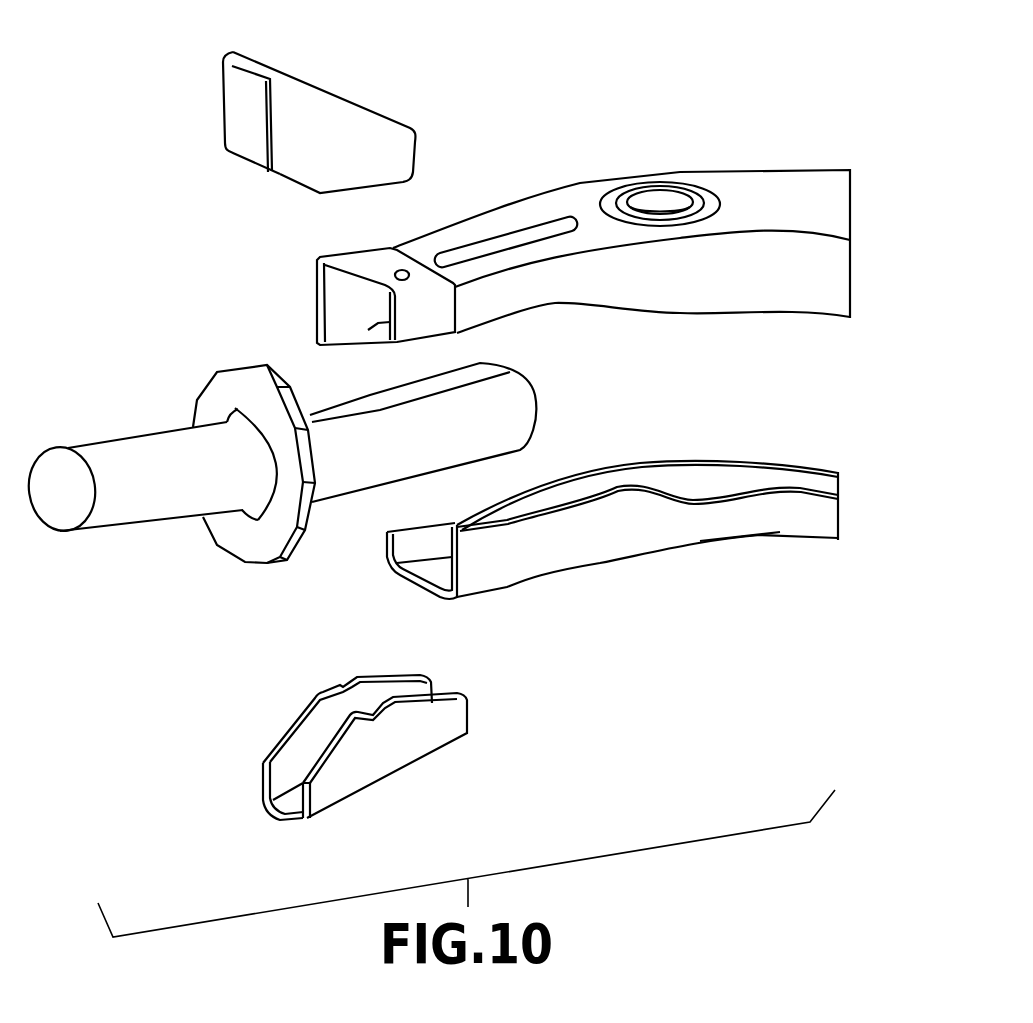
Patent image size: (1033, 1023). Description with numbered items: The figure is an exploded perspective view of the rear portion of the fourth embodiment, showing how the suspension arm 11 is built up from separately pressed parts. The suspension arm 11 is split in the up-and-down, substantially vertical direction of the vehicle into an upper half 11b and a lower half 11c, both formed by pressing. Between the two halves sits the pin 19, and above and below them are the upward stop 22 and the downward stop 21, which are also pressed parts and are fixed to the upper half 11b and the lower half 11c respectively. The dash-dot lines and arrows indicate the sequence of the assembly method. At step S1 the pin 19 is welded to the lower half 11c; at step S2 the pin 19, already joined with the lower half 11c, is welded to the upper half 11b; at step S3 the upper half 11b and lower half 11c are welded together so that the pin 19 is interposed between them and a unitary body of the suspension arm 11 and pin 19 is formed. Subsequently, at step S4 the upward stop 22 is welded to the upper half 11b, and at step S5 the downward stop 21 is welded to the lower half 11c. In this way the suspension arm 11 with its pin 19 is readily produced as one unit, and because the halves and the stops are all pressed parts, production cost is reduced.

The upward stop 22 is at (353, 98).
The step S4 is at (298, 190).
The upper half 11b is at (750, 295).
The lower half 11c is at (753, 462).
The suspension arm 11 is at (843, 340).
The step S3 is at (675, 452).
The step S2 is at (379, 379).
The step S1 is at (374, 508).
The pin 19 is at (147, 508).
The step S5 is at (345, 707).
The downward stop 21 is at (413, 767).